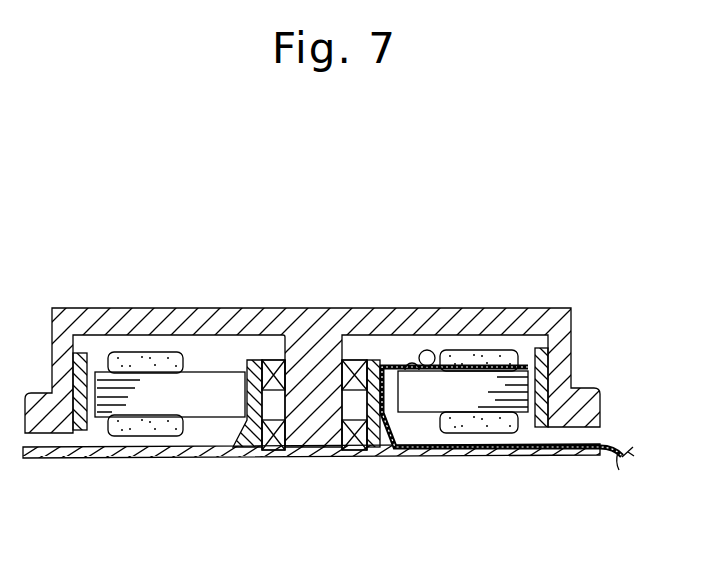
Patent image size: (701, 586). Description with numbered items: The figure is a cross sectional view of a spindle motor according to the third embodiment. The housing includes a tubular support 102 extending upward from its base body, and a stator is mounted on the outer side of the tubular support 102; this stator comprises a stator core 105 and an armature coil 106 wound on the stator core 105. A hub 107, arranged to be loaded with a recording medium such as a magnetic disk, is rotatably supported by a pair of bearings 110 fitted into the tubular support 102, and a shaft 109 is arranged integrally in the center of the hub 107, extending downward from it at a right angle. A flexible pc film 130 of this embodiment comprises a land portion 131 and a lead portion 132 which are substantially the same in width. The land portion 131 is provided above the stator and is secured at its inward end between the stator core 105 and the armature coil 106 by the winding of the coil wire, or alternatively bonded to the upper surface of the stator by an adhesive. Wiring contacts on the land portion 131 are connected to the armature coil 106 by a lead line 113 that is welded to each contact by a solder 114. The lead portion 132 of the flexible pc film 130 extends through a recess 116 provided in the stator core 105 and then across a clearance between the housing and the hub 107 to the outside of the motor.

The tubular support 102 is at (343, 340).
The stator core 105 is at (532, 385).
The armature coil 106 is at (478, 350).
The hub 107 is at (184, 305).
The shaft 109 is at (312, 440).
The bearings 110 is at (262, 358).
The lead line 113 is at (430, 351).
The solder 114 is at (386, 364).
The recess 116 is at (397, 380).
The flexible pc film 130 is at (447, 457).
The land portion 131 is at (543, 347).
The lead portion 132 is at (520, 456).